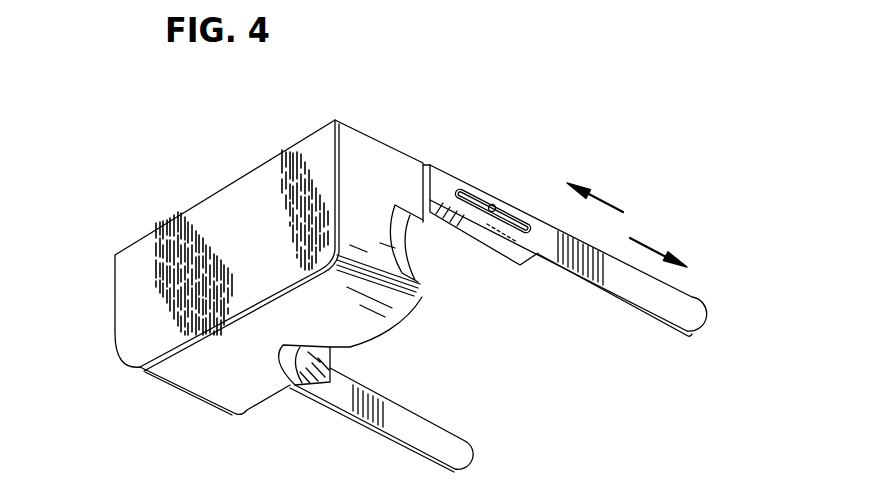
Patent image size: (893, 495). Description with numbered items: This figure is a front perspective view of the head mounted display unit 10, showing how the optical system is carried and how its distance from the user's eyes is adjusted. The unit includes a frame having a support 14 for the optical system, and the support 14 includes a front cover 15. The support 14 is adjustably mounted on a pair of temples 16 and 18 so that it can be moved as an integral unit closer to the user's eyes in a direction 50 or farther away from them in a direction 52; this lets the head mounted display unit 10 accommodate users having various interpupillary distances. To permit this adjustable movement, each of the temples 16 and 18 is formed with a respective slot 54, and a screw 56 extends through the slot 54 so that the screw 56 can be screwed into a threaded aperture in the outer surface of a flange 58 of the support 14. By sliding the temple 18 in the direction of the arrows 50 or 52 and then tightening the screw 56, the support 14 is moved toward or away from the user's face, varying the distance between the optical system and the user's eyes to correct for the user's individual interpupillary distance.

The head mounted display unit 10 is at (446, 123).
The support 14 is at (375, 172).
The front cover 15 is at (137, 315).
The temple 16 is at (600, 275).
The temple 18 is at (383, 410).
The direction 50 is at (650, 247).
The direction 52 is at (595, 195).
The slot 54 is at (517, 216).
The screw 56 is at (491, 204).
The flange 58 is at (473, 230).